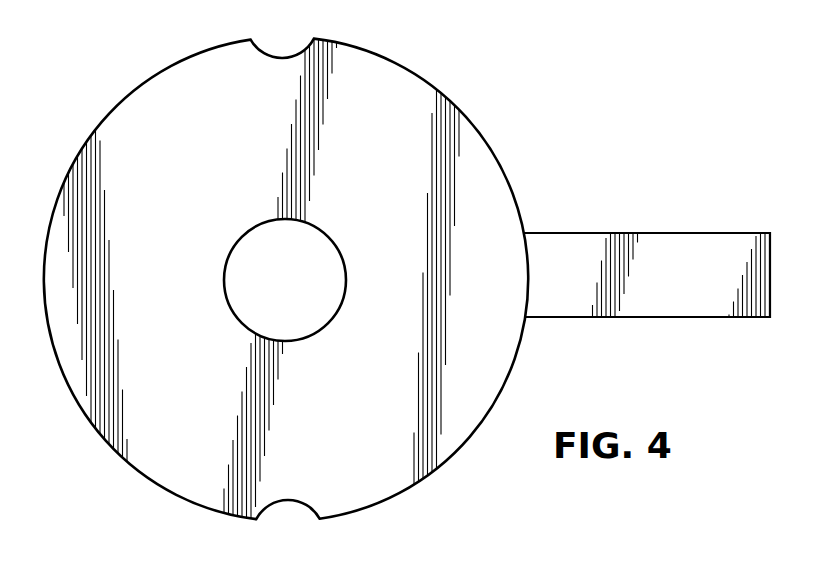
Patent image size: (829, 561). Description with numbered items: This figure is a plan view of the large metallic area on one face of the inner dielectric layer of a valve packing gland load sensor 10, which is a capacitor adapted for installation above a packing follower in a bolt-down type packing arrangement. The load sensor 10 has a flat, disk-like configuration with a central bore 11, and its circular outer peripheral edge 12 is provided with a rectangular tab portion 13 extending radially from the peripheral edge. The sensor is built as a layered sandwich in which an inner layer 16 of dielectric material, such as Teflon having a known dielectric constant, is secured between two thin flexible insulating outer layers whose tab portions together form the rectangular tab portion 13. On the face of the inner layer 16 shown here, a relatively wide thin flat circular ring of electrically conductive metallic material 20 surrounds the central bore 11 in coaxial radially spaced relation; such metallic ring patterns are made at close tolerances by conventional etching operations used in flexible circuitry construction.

The valve packing gland load sensor 10 is at (407, 287).
The central bore 11 is at (325, 262).
The circular outer peripheral edge 12 is at (100, 118).
The rectangular tab portion 13 is at (660, 240).
The inner layer 16 is at (447, 98).
The circular ring of electrically conductive metallic material 20 is at (140, 442).